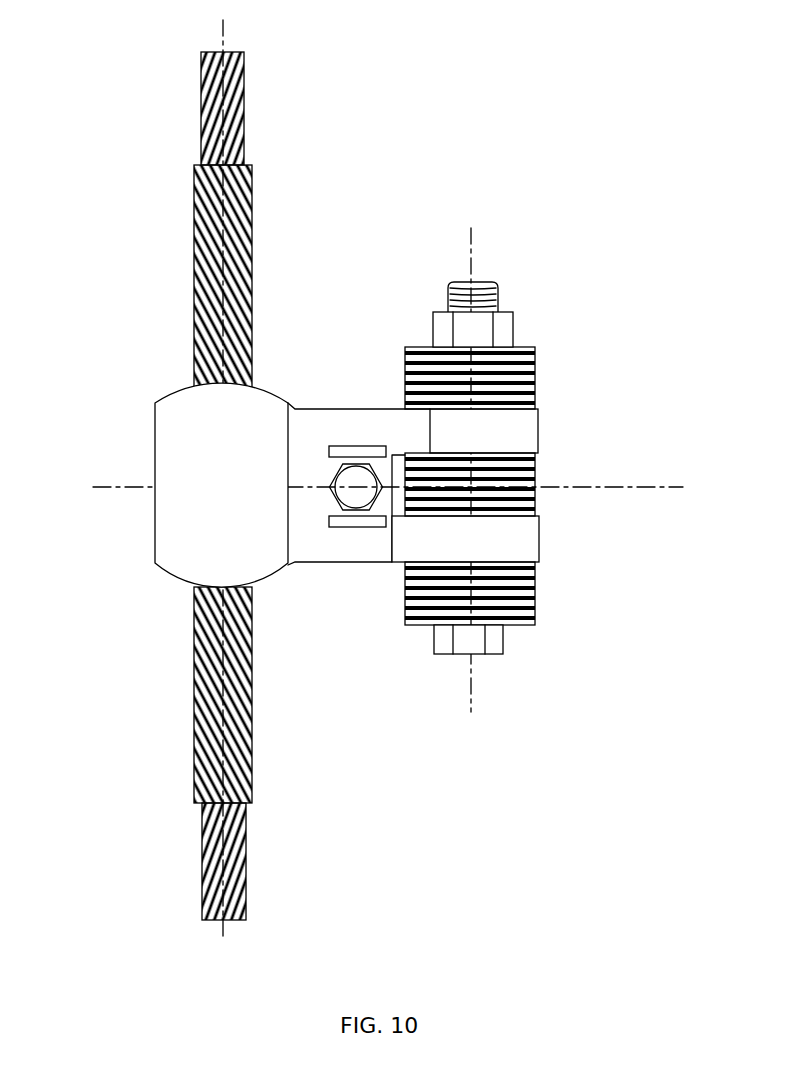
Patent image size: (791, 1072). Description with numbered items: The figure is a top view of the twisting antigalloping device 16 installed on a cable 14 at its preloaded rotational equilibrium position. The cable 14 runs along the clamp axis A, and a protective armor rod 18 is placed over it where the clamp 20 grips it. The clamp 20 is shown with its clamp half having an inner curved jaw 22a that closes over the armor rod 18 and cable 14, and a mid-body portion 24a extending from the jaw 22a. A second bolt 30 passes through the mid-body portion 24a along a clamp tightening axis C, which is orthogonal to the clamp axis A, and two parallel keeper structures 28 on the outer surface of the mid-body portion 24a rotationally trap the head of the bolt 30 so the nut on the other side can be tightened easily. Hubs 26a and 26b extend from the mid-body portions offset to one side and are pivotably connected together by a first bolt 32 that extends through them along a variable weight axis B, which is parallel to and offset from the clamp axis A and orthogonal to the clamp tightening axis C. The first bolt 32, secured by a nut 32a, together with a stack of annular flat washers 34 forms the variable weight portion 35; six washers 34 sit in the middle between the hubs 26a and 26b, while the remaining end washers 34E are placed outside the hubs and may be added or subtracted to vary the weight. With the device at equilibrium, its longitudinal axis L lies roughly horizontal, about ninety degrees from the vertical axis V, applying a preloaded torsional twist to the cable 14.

The cable 14 is at (204, 845).
The twisting antigalloping device 16 is at (638, 207).
The armor rod 18 is at (196, 750).
The clamp 20 is at (155, 531).
The curved jaw 22a is at (178, 393).
The mid-body portion 24a is at (327, 565).
The hub 26a is at (530, 434).
The hub 26b is at (535, 545).
The keeper structures 28 is at (352, 445).
The second bolt 30 is at (348, 496).
The first bolt 32 is at (443, 655).
The nut 32a is at (433, 330).
The flat washers 34 is at (535, 477).
The end washers 34E is at (535, 350).
The variable weight portion 35 is at (524, 627).
The clamp axis A is at (222, 561).
The variable weight axis B is at (472, 700).
The clamp tightening axis C is at (352, 485).
The longitudinal axis L is at (652, 490).
The vertical axis V is at (220, 492).